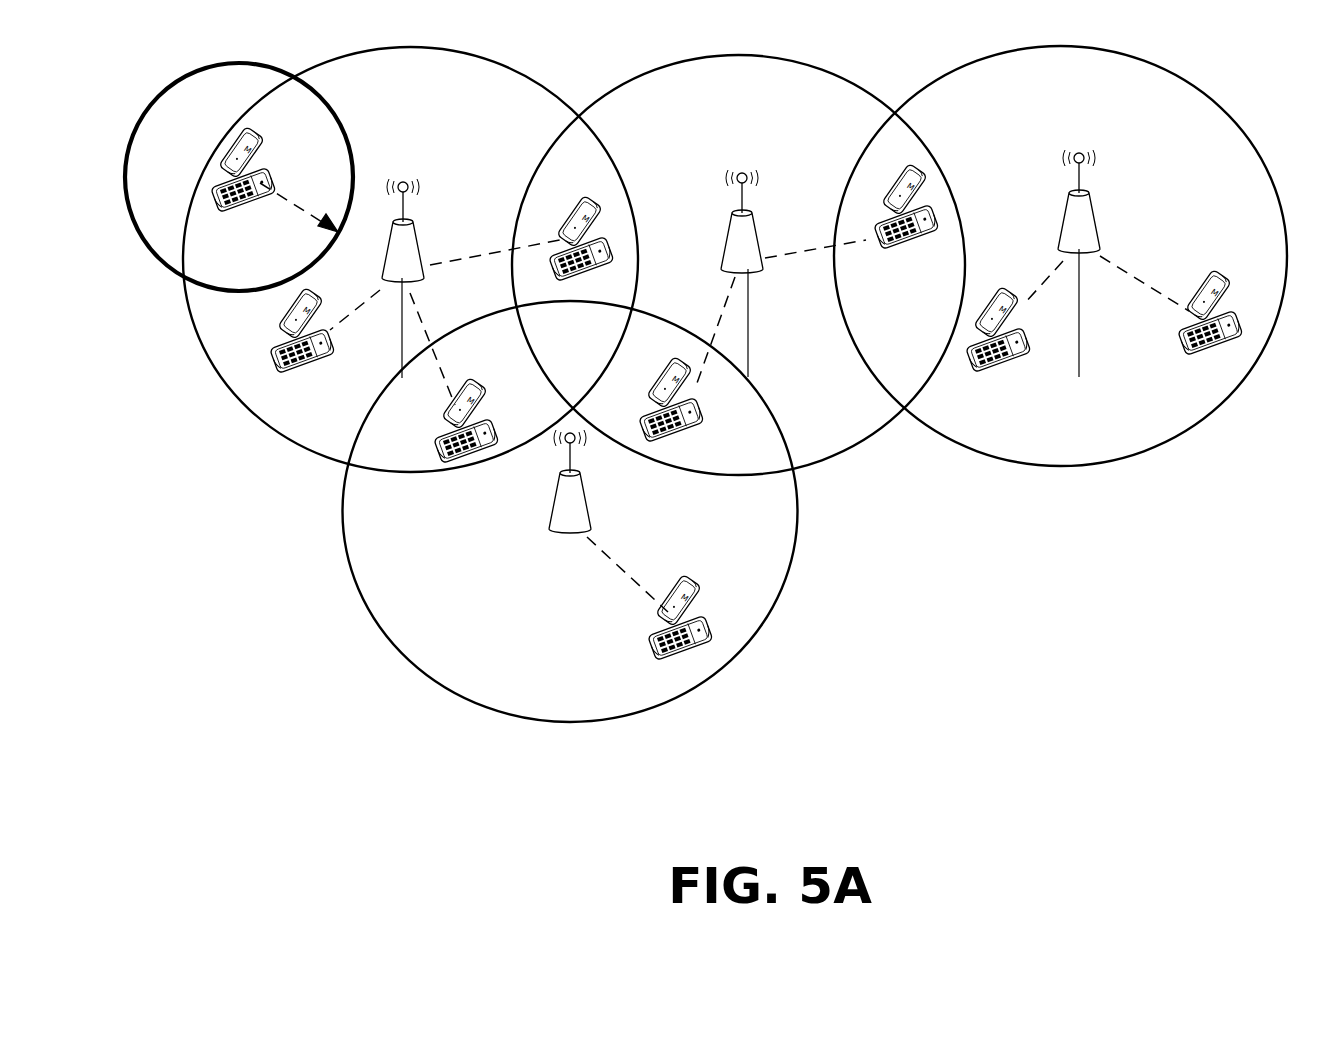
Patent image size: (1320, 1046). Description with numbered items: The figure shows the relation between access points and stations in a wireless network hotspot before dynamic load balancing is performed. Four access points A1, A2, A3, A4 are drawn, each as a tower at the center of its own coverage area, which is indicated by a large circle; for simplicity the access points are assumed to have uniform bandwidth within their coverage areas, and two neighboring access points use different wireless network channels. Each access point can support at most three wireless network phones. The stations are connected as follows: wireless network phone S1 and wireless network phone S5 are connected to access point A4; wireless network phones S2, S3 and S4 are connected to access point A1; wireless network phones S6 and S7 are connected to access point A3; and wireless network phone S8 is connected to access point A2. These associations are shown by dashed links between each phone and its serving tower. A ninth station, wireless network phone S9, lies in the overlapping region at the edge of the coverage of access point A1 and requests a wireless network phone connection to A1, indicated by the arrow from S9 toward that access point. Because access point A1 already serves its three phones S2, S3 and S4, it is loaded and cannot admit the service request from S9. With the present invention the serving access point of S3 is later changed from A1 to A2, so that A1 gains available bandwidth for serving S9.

The access point A1 is at (403, 258).
The access point A2 is at (572, 504).
The access point A3 is at (758, 273).
The access point A4 is at (1080, 243).
The wireless network phone S1 is at (998, 339).
The wireless network phone S2 is at (303, 336).
The wireless network phone S3 is at (450, 420).
The wireless network phone S4 is at (583, 246).
The wireless network phone S5 is at (1210, 327).
The wireless network phone S6 is at (906, 223).
The wireless network phone S7 is at (678, 407).
The wireless network phone S8 is at (678, 633).
The wireless network phone S9 is at (274, 188).